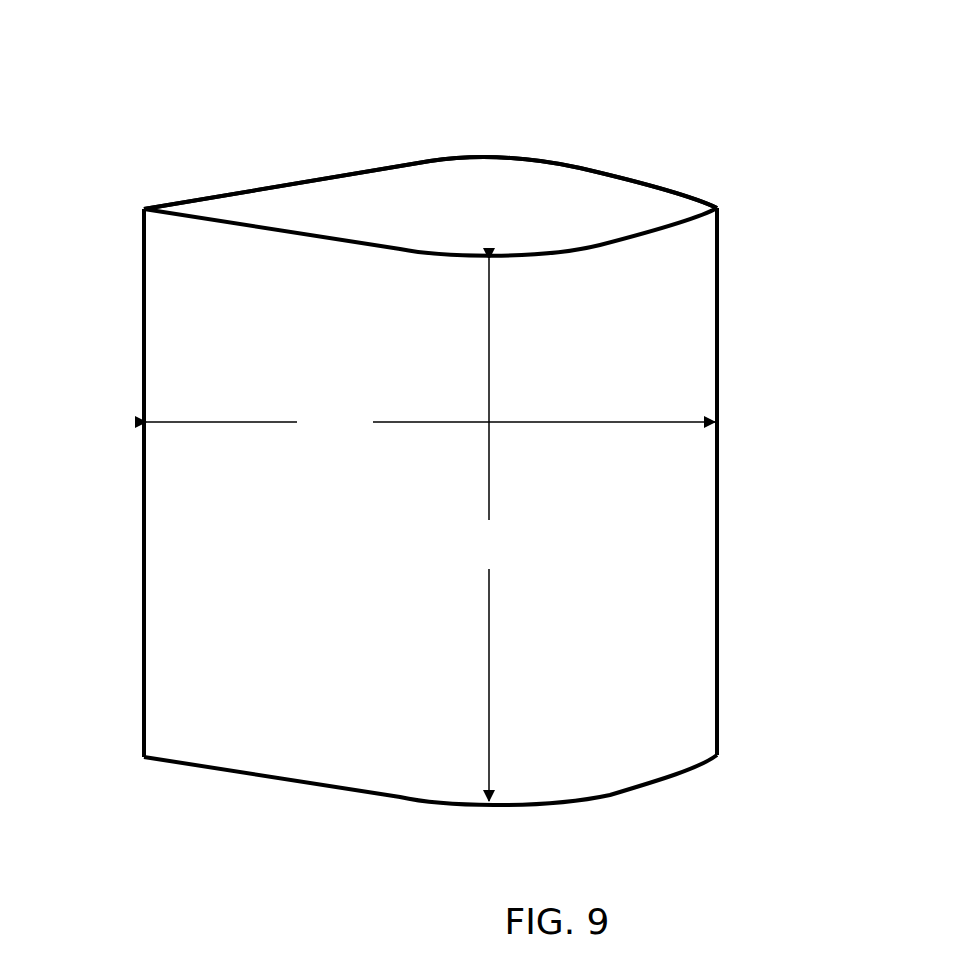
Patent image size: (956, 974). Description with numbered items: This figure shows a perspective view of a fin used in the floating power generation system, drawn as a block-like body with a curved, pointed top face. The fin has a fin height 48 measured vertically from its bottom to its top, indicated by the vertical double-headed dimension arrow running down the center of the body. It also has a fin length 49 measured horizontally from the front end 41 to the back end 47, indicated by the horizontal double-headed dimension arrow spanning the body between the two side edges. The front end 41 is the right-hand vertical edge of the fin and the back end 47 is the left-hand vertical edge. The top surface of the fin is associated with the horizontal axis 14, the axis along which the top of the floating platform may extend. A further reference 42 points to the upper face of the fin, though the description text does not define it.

The horizontal axis 14 is at (397, 180).
The top face 42 is at (691, 165).
The back end 47 is at (143, 332).
The front end 41 is at (718, 353).
The fin height 48 is at (487, 530).
The fin length 49 is at (430, 422).